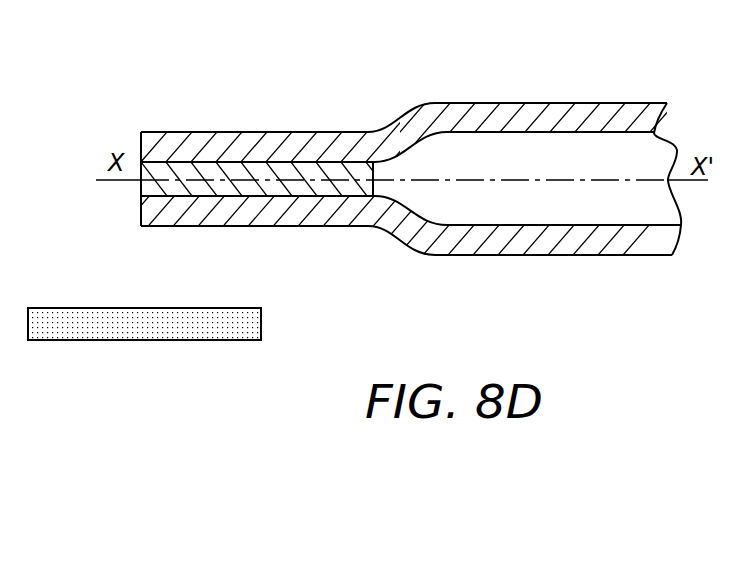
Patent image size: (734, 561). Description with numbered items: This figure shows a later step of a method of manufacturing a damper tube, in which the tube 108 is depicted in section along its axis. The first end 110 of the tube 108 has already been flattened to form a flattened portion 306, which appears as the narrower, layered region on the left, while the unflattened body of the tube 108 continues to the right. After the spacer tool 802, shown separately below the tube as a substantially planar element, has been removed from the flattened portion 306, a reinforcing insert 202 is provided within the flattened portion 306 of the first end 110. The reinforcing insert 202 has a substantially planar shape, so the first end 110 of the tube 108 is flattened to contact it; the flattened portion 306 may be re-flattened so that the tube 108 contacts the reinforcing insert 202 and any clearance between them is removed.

The tube 108 is at (515, 85).
The first end 110 is at (124, 112).
The reinforcing insert 202 is at (350, 168).
The flattened portion 306 is at (368, 242).
The spacer tool 802 is at (73, 308).